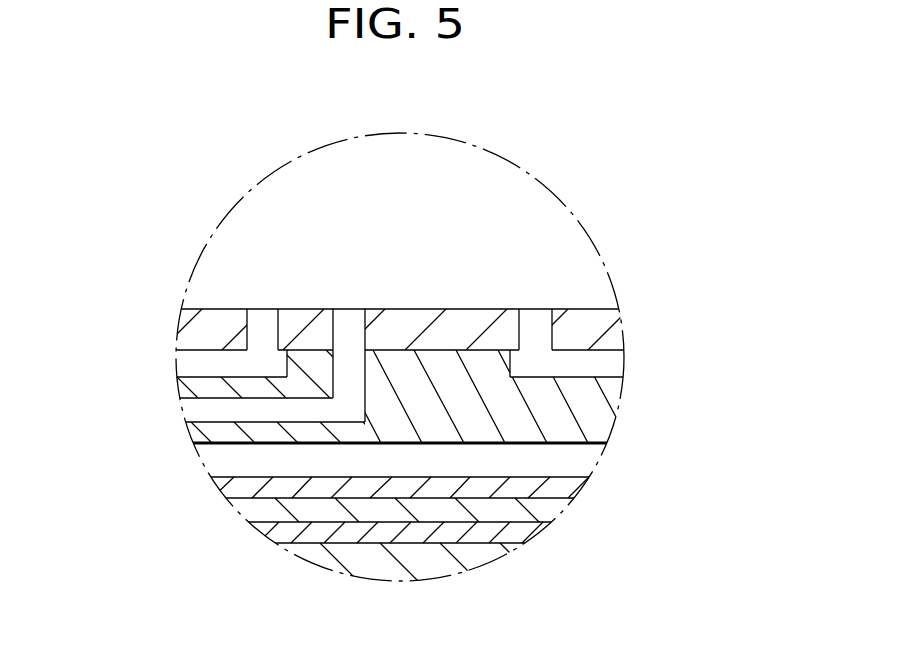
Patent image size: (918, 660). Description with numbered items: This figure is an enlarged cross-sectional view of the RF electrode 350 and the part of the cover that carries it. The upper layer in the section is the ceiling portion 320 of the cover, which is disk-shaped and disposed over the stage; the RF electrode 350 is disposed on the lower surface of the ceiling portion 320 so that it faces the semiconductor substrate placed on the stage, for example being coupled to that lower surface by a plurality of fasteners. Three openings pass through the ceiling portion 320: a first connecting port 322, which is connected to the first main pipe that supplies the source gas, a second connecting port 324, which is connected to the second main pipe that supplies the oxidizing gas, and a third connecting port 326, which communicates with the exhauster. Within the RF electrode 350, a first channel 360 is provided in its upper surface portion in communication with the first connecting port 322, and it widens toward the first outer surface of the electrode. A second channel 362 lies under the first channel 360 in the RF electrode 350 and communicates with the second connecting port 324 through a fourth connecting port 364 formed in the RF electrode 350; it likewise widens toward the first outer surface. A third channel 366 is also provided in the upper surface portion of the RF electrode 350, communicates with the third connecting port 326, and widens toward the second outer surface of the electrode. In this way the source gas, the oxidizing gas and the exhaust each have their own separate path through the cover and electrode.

The ceiling portion 320 is at (460, 320).
The first connecting port 322 is at (263, 320).
The second connecting port 324 is at (348, 320).
The third connecting port 326 is at (537, 320).
The RF electrode 350 is at (590, 417).
The first channel 360 is at (190, 363).
The second channel 362 is at (193, 413).
The fourth connecting port 364 is at (354, 364).
The third channel 366 is at (610, 362).